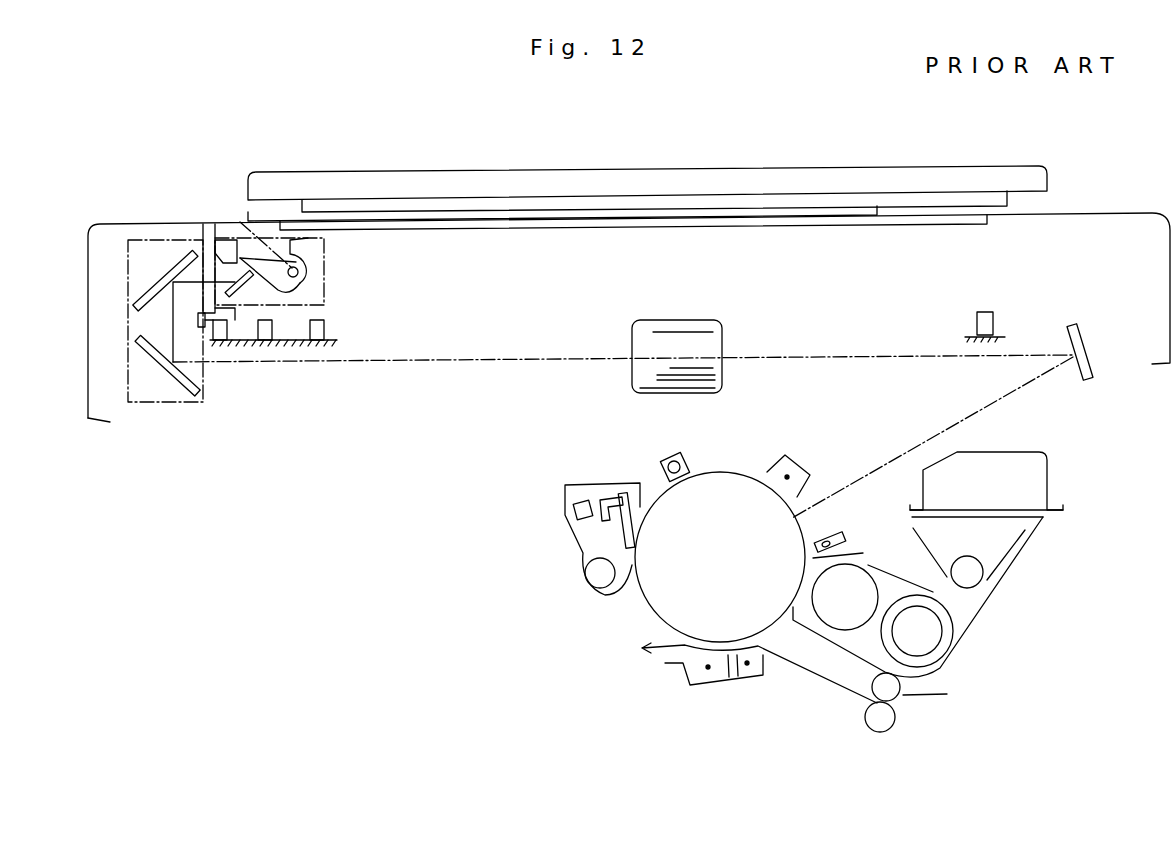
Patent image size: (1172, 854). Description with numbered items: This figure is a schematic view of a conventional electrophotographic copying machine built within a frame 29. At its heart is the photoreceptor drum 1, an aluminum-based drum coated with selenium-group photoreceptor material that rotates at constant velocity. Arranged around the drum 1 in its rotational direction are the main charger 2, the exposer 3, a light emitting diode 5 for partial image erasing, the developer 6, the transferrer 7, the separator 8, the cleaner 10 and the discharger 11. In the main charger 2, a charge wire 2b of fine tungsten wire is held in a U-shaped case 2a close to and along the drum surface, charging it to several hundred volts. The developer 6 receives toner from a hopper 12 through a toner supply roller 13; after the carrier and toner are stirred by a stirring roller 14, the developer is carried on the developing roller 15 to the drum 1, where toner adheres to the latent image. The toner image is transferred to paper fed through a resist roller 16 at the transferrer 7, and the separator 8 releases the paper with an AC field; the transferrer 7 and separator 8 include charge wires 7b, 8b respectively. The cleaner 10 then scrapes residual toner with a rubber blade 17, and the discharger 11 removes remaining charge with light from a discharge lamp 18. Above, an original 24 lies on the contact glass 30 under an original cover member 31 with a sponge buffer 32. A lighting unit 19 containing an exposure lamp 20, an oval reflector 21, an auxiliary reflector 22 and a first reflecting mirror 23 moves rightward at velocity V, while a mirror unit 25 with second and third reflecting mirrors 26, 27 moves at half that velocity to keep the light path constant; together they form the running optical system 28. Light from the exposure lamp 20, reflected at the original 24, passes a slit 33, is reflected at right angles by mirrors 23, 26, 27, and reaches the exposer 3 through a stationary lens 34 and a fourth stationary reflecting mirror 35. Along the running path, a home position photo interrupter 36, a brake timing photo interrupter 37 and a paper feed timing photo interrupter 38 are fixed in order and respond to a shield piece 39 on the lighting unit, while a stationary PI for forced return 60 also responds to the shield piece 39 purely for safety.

The photoreceptor drum 1 is at (655, 602).
The main charger 2 is at (780, 488).
The U-shaped case 2a is at (803, 465).
The charge wire 2b is at (773, 468).
The exposer 3 is at (792, 518).
The light emitting diode 5 is at (823, 537).
The developer 6 is at (800, 603).
The transferrer 7 is at (743, 657).
The charge wire 7b is at (747, 670).
The separator 8 is at (700, 658).
The charge wire 8b is at (708, 673).
The cleaner 10 is at (637, 535).
The discharger 11 is at (682, 480).
The hopper 12 is at (1025, 530).
The toner supply roller 13 is at (968, 577).
The stirring roller 14 is at (948, 632).
The developing roller 15 is at (845, 610).
The resist roller 16 is at (902, 687).
The blade 17 is at (583, 543).
The discharge lamp 18 is at (676, 455).
The lighting unit 19 is at (327, 270).
The exposure lamp 20 is at (298, 268).
The oval reflector 21 is at (300, 284).
The auxiliary reflector 22 is at (220, 252).
The first reflecting mirror 23 is at (244, 288).
The original 24 is at (777, 212).
The mirror unit 25 is at (157, 403).
The second reflecting mirror 26 is at (155, 288).
The third reflecting mirror 27 is at (144, 352).
The running optical system 28 is at (202, 230).
The frame 29 is at (1118, 212).
The contact glass 30 is at (845, 225).
The original cover member 31 is at (905, 173).
The buffer 32 is at (803, 200).
The slit 33 is at (237, 250).
The stationary lens 34 is at (724, 333).
The fourth stationary reflecting mirror 35 is at (1088, 342).
The home position photo interrupter 36 is at (224, 340).
The brake timing photo interrupter 37 is at (273, 328).
The paper feed timing photo interrupter 38 is at (325, 328).
The shield piece 39 is at (236, 322).
The PI for forced return 60 is at (994, 318).